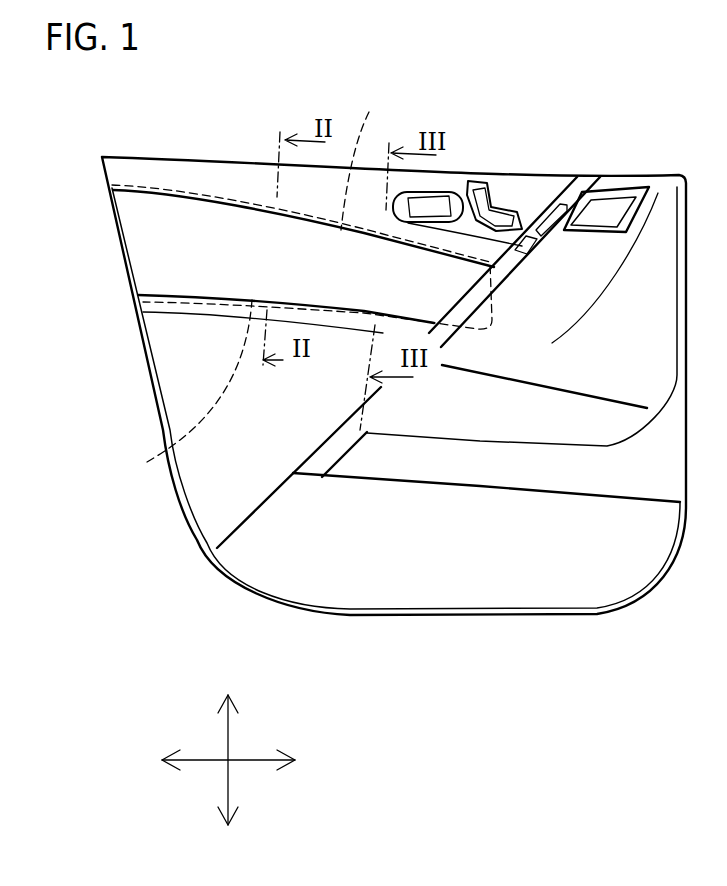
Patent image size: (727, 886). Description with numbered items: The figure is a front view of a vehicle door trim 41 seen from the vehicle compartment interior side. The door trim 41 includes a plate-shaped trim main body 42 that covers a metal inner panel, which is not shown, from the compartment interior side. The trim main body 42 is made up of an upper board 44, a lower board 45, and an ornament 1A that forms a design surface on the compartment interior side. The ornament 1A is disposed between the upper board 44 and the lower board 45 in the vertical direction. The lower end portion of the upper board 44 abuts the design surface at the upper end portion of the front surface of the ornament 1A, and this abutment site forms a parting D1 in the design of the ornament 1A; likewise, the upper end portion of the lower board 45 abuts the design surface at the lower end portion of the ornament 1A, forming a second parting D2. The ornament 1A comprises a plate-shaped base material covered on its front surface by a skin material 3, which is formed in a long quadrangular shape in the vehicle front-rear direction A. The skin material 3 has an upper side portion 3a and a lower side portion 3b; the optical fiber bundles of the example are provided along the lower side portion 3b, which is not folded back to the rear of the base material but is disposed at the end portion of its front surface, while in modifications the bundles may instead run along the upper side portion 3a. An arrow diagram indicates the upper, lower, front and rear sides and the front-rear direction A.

The vehicle door trim 41 is at (557, 127).
The trim main body 42 is at (192, 156).
The upper board 44 is at (262, 175).
The lower board 45 is at (200, 380).
The skin material 3 is at (140, 296).
The upper side portion of the skin material 3a is at (365, 153).
The lower side portion of the skin material 3b is at (176, 395).
The ornament 1A is at (155, 267).
The parting D1 is at (173, 203).
The parting D2 is at (202, 290).
The vehicle front-rear direction A is at (253, 762).